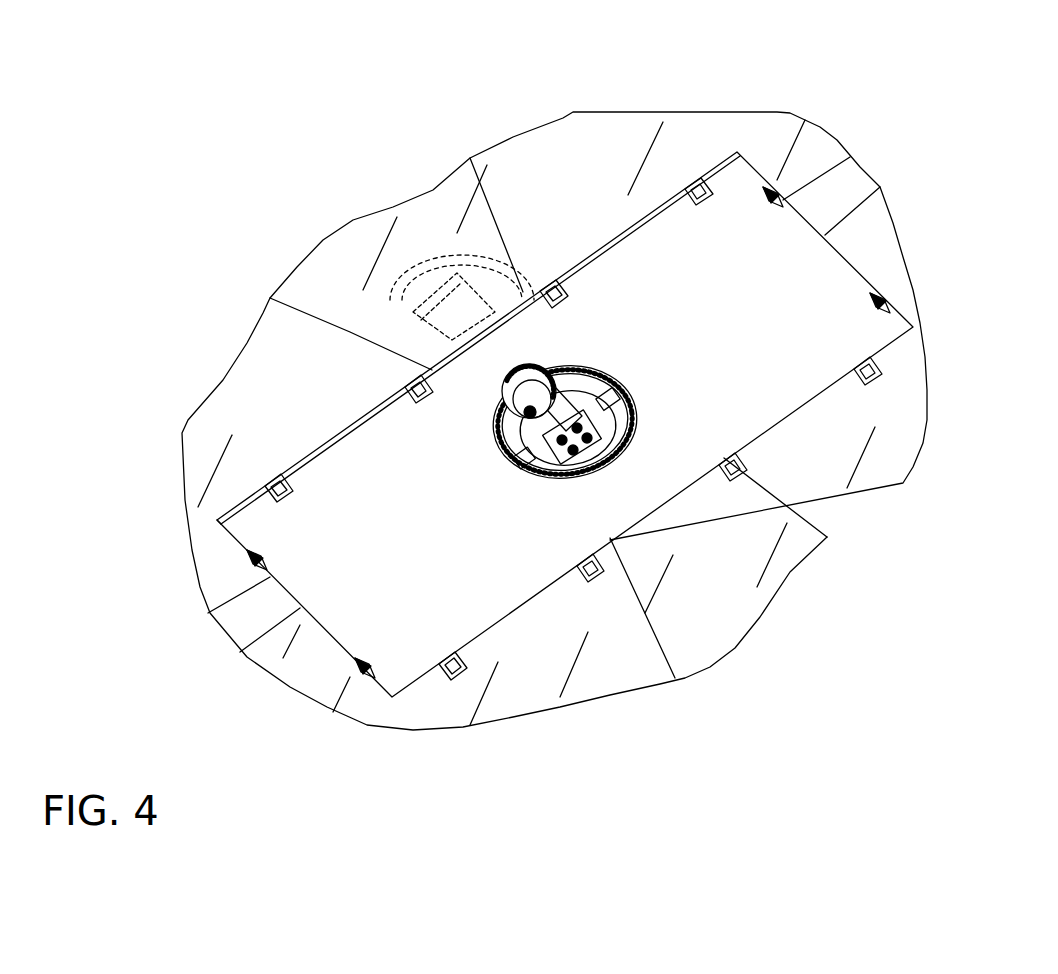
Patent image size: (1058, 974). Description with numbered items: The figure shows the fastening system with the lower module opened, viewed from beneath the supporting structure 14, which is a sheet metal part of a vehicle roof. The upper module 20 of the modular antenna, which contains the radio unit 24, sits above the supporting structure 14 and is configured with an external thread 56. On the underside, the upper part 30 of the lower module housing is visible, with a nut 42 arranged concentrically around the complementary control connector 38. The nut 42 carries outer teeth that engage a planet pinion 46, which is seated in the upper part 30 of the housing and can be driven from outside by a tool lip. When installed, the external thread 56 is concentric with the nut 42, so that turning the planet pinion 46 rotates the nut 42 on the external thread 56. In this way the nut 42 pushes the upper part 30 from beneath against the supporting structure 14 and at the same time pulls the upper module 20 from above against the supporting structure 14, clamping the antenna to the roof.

The supporting structure 14 is at (566, 172).
The upper part 30 is at (733, 195).
The upper module 20 is at (438, 275).
The radio unit 24 is at (438, 275).
The nut 42 is at (643, 417).
The external thread 56 is at (567, 388).
The complementary control connector 38 is at (578, 448).
The planet pinion 46 is at (503, 394).